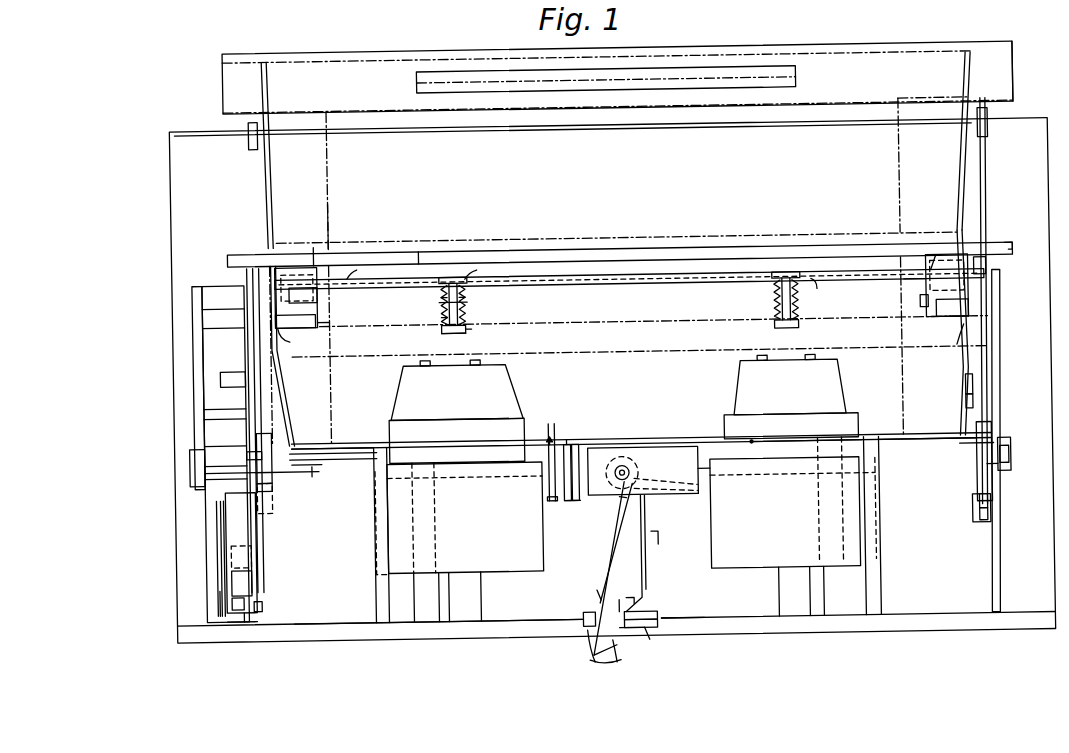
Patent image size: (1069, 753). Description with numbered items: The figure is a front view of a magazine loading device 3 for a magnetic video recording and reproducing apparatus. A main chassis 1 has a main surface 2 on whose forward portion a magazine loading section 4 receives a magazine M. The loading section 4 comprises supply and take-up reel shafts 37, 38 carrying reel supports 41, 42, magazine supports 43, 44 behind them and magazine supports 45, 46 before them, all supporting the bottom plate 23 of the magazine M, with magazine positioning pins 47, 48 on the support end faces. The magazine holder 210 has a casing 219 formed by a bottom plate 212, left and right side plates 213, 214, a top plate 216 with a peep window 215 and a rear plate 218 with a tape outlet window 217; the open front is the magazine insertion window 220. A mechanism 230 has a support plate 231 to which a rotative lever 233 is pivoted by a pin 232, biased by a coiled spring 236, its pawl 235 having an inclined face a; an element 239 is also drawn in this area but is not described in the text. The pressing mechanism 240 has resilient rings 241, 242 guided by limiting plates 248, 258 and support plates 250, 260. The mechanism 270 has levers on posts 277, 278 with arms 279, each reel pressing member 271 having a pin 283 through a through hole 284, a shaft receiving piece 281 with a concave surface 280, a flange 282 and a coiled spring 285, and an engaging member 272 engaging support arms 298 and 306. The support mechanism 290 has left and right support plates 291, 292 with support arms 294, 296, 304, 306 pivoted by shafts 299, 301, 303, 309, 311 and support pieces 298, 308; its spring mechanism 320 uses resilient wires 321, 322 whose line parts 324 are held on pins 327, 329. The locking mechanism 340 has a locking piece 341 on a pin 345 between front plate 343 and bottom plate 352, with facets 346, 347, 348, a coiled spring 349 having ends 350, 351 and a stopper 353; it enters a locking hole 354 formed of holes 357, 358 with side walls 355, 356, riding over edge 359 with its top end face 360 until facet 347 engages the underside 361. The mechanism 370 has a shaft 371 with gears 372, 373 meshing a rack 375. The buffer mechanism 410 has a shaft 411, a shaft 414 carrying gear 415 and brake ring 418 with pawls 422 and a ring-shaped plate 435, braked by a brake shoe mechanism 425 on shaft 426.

The main chassis 1 is at (322, 636).
The main surface 2 is at (325, 619).
The magazine loading device 3 is at (216, 232).
The magazine loading section 4 is at (344, 531).
The bottom plate 23 is at (752, 445).
The supply reel shaft 37 is at (476, 592).
The take-up reel shaft 38 is at (782, 589).
The reel support 41 is at (508, 370).
The reel support 42 is at (742, 384).
The magazine support 43 is at (414, 585).
The magazine support 44 is at (826, 590).
The magazine support 45 is at (372, 584).
The magazine support 46 is at (878, 592).
The magazine positioning pin 47 is at (418, 437).
The magazine positioning pin 48 is at (834, 428).
The magazine holder 210 is at (166, 88).
The bottom plate 212 is at (530, 249).
The left side plate 213 is at (273, 165).
The right side plate 214 is at (968, 157).
The peep window 215 is at (802, 78).
The top plate 216 is at (1014, 80).
The tape outlet window 217 is at (348, 366).
The rear plate 218 is at (328, 158).
The casing 219 is at (652, 243).
The magazine insertion window 220 is at (888, 420).
The mechanism 230 is at (548, 439).
The support plate 231 is at (566, 440).
The pin 232 is at (564, 500).
The rotative lever 233 is at (545, 497).
The pawl 235 is at (546, 424).
The coiled spring 236 is at (570, 502).
The plate 239 is at (226, 413).
The magazine pressing mechanism 240 is at (298, 343).
The resilient ring 241 is at (320, 319).
The resilient ring 242 is at (923, 312).
The limiting plate 248 is at (289, 342).
The support plate 250 is at (315, 249).
The limiting plate 258 is at (949, 343).
The support plate 260 is at (928, 262).
The mechanism 270 is at (377, 306).
The reel pressing member 271 is at (464, 320).
The engaging member 272 is at (276, 278).
The post 277 is at (318, 291).
The post 278 is at (927, 286).
The arm 279 is at (597, 284).
The concave surface 280 is at (466, 328).
The shaft receiving piece 281 is at (446, 331).
The flange 282 is at (482, 272).
The pin 283 is at (442, 316).
The through hole 284 is at (466, 296).
The coiled spring 285 is at (442, 296).
The support mechanism 290 is at (216, 347).
The left support plate 291 is at (205, 322).
The right support plate 292 is at (996, 544).
The support arm 294 is at (248, 454).
The support arm 296 is at (262, 181).
The support piece 298 is at (292, 452).
The shaft 299 is at (292, 462).
The shaft 301 is at (252, 138).
The shaft 303 is at (968, 408).
The support arm 304 is at (966, 390).
The support arm 306 is at (988, 173).
The support piece 308 is at (975, 452).
The shaft 309 is at (985, 472).
The shaft 311 is at (991, 134).
The spring mechanism 320 is at (619, 280).
The resilient wire 321 is at (203, 280).
The resilient wire 322 is at (686, 284).
The line part 324 is at (206, 390).
The pin 327 is at (188, 445).
The pin 329 is at (1008, 450).
The locking mechanism 340 is at (573, 556).
The locking piece 341 is at (639, 582).
The front plate 343 is at (680, 492).
The pin 345 is at (628, 459).
The inclined facet 346 is at (628, 630).
The facet 347 is at (653, 626).
The facet 348 is at (631, 601).
The coiled spring 349 is at (620, 500).
The spring end 350 is at (681, 495).
The spring end 351 is at (596, 598).
The bottom plate 352 is at (700, 497).
The stopper 353 is at (666, 544).
The locking hole 354 is at (580, 612).
The side wall 355 is at (580, 654).
The side wall 356 is at (620, 659).
The hole 357 is at (578, 683).
The hole 358 is at (653, 614).
The edge 359 is at (615, 600).
The top end face 360 is at (648, 640).
The underside 361 is at (722, 636).
The mechanism 370 is at (283, 496).
The shaft 371 is at (330, 441).
The gear 372 is at (264, 488).
The gear 373 is at (978, 500).
The rack 375 is at (979, 520).
The buffer mechanism 410 is at (282, 591).
The shaft 411 is at (216, 594).
The shaft 414 is at (248, 549).
The gear 415 is at (266, 566).
The brake ring 418 is at (242, 610).
The pawl 422 is at (214, 530).
The brake shoe mechanism 425 is at (228, 578).
The shaft 426 is at (247, 467).
The ring-shaped plate 435 is at (258, 600).
The magazine M is at (617, 322).
The inclined face a is at (552, 434).